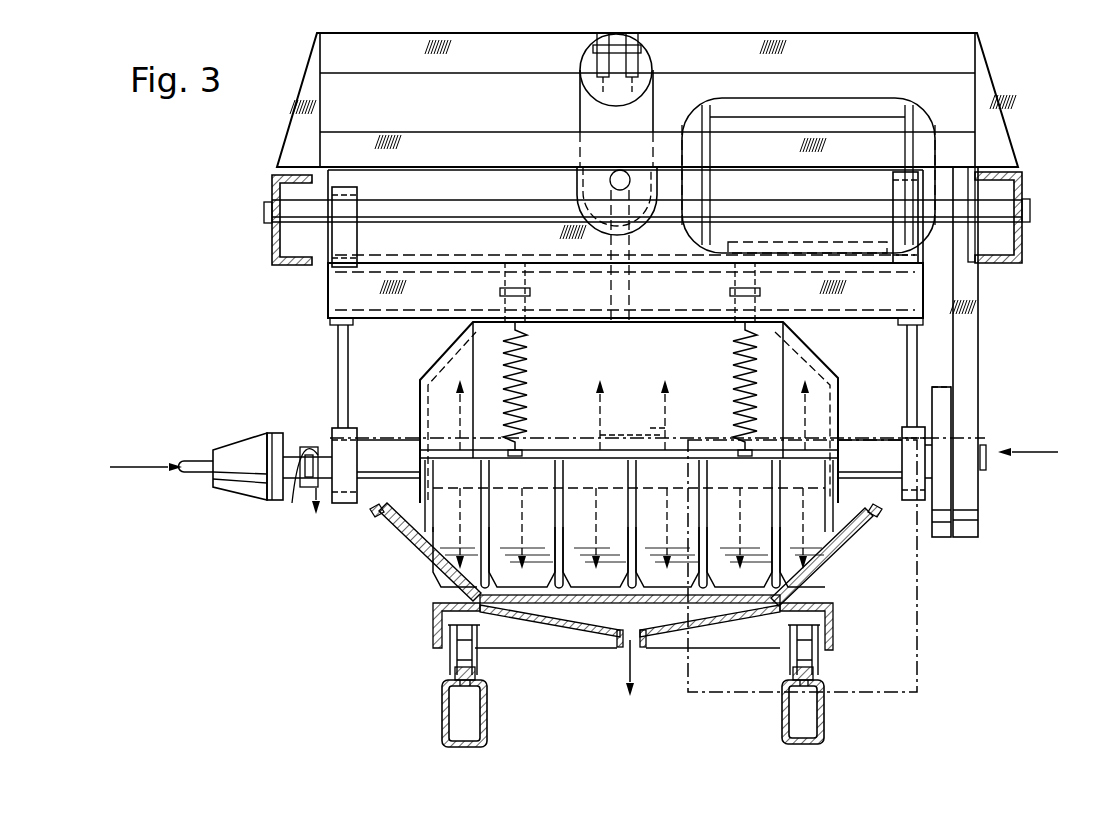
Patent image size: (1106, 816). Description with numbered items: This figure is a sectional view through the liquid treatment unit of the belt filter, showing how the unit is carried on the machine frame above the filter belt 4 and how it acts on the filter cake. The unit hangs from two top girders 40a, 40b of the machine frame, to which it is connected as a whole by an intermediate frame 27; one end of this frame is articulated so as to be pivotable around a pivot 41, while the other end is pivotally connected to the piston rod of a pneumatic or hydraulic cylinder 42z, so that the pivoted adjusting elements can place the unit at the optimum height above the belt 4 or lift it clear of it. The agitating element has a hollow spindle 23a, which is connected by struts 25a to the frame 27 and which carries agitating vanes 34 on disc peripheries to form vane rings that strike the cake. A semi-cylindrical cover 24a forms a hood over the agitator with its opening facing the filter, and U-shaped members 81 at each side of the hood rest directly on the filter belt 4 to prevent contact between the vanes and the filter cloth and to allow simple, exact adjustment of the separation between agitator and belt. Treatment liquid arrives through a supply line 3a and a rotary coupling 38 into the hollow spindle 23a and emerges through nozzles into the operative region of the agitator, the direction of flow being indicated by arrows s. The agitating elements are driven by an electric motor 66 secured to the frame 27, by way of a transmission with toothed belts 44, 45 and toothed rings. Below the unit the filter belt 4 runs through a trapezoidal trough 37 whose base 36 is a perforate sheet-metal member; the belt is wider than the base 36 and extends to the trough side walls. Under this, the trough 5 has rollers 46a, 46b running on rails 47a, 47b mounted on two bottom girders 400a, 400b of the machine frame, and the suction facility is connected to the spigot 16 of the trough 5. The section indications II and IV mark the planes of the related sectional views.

The supply line 3a is at (192, 475).
The filter belt 4 is at (413, 523).
The trough 5 is at (540, 626).
The spigot 16 is at (643, 640).
The spindle 23a is at (927, 453).
The cover 24a is at (425, 432).
The strut 25a is at (345, 360).
The intermediate frame 27 is at (328, 297).
The agitating vane 34 is at (629, 537).
The trough base 36 is at (598, 605).
The trapezoidal trough 37 is at (405, 547).
The rotary coupling 38 is at (247, 487).
The top girder 40a is at (270, 237).
The top girder 40b is at (1023, 245).
The pivot 41 is at (428, 208).
The pneumatic or hydraulic cylinder 42z is at (588, 114).
The toothed belt 44 is at (968, 331).
The toothed belt 45 is at (942, 545).
The roller 46a is at (810, 655).
The roller 46b is at (458, 655).
The rail 47a is at (810, 690).
The rail 47b is at (465, 686).
The electric motor 66 is at (855, 118).
The U-shaped member 81 is at (630, 476).
The bottom girder 400a is at (824, 735).
The bottom girder 400b is at (442, 735).
The arrows indicating liquid flow direction s is at (612, 436).
The section line II is at (1037, 455).
The section line IV is at (917, 637).